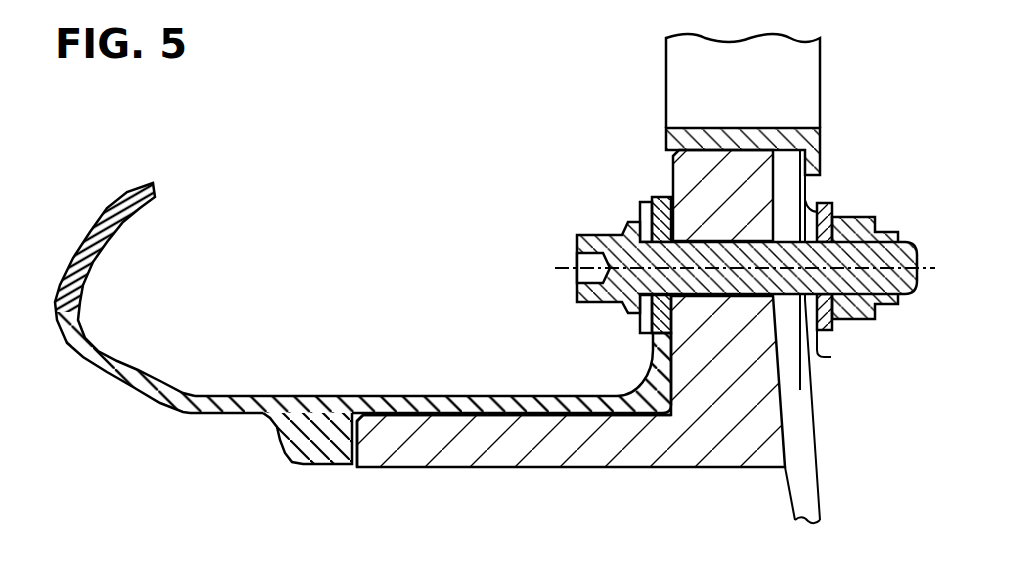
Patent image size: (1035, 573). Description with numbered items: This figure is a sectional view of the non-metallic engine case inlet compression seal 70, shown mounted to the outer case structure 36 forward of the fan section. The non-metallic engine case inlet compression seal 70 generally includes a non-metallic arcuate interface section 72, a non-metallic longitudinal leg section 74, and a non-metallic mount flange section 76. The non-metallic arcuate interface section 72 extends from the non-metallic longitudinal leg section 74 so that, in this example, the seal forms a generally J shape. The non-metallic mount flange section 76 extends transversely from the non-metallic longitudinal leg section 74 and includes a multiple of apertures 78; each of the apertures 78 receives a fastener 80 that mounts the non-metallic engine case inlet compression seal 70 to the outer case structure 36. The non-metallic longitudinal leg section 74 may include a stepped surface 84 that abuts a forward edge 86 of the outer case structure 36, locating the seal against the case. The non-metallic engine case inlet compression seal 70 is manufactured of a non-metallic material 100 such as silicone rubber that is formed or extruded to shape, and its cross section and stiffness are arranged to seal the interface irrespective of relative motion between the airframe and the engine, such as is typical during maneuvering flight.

The outer case structure 36 is at (760, 200).
The non-metallic engine case inlet compression seal 70 is at (350, 333).
The non-metallic arcuate interface section 72 is at (55, 328).
The non-metallic longitudinal leg section 74 is at (450, 395).
The non-metallic mount flange section 76 is at (673, 333).
The apertures 78 is at (650, 202).
The fastener 80 is at (600, 227).
The stepped surface 84 is at (325, 427).
The forward edge 86 is at (457, 443).
The non-metallic material 100 is at (230, 405).